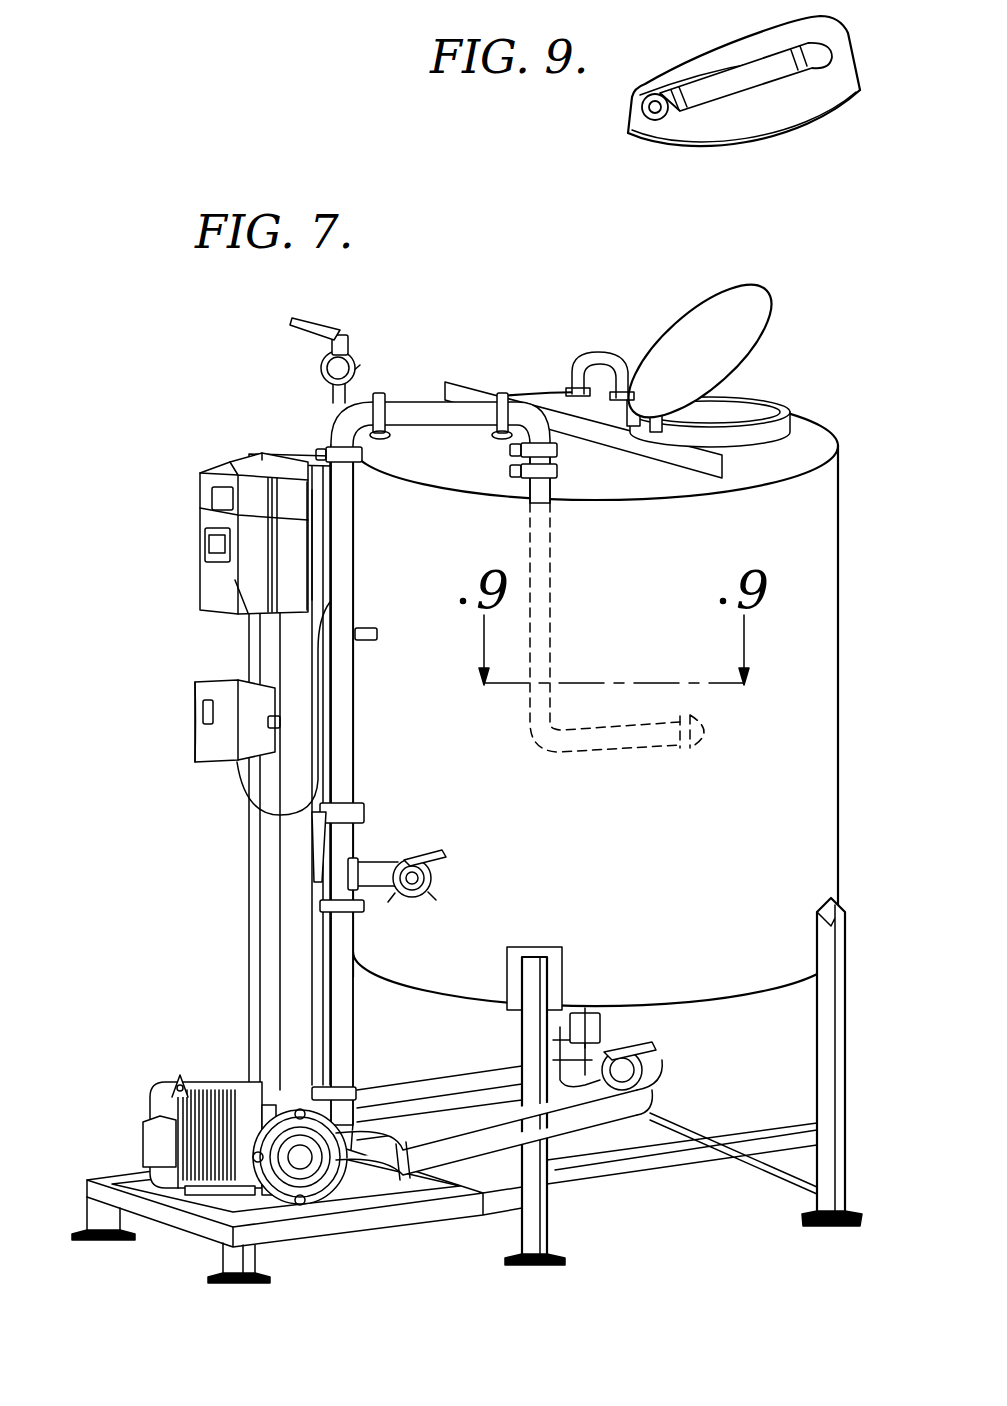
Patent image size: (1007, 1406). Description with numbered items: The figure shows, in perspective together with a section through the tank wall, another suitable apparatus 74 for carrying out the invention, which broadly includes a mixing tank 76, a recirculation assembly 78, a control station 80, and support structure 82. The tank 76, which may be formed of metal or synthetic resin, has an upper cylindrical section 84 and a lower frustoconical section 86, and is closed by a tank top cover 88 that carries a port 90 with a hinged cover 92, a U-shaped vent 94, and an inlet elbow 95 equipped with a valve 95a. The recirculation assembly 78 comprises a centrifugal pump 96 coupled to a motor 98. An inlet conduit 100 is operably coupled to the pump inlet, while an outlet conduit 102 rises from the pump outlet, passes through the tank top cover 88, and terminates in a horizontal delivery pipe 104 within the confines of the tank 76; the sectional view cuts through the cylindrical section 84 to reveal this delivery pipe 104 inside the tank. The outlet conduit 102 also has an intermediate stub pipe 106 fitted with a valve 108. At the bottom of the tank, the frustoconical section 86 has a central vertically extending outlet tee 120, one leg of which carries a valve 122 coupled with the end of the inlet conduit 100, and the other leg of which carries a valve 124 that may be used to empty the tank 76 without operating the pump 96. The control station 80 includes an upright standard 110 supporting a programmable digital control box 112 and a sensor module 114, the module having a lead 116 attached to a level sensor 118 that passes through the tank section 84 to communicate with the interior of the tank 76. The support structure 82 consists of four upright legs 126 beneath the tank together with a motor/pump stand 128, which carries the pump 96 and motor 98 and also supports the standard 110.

In FIG. 7, the apparatus 74 is at (622, 647).
In FIG. 9, the mixing tank 76 is at (750, 110).
In FIG. 7, the mixing tank 76 is at (622, 710).
In FIG. 7, the recirculation assembly 78 is at (387, 1105).
In FIG. 7, the control station 80 is at (259, 637).
In FIG. 7, the support structure 82 is at (609, 1085).
In FIG. 9, the upper cylindrical section 84 is at (790, 128).
In FIG. 7, the upper cylindrical section 84 is at (805, 748).
In FIG. 9, the lower frustoconical section 86 is at (845, 68).
In FIG. 7, the lower frustoconical section 86 is at (640, 1025).
In FIG. 7, the tank top cover 88 is at (818, 440).
In FIG. 7, the port 90 is at (740, 405).
In FIG. 7, the hinged cover 92 is at (725, 312).
In FIG. 7, the U-shaped vent 94 is at (598, 357).
In FIG. 7, the inlet elbow 95 is at (325, 359).
In FIG. 7, the valve 95a is at (315, 360).
In FIG. 7, the centrifugal pump 96 is at (300, 1205).
In FIG. 7, the motor 98 is at (200, 1082).
In FIG. 7, the inlet conduit 100 is at (460, 1145).
In FIG. 7, the outlet conduit 102 is at (345, 1018).
In FIG. 9, the horizontal delivery pipe 104 is at (735, 78).
In FIG. 7, the horizontal delivery pipe 104 is at (618, 752).
In FIG. 7, the intermediate stub pipe 106 is at (378, 873).
In FIG. 7, the valve 108 is at (432, 880).
In FIG. 7, the upright standard 110 is at (255, 908).
In FIG. 7, the programmable digital control box 112 is at (210, 586).
In FIG. 7, the sensor module 114 is at (202, 700).
In FIG. 7, the lead 116 is at (240, 794).
In FIG. 7, the level sensor 118 is at (375, 630).
In FIG. 7, the outlet tee 120 is at (583, 1005).
In FIG. 7, the valve 122 is at (642, 1065).
In FIG. 7, the valve 124 is at (548, 1050).
In FIG. 7, the upright legs 126 is at (828, 1065).
In FIG. 7, the motor/pump stand 128 is at (172, 1222).